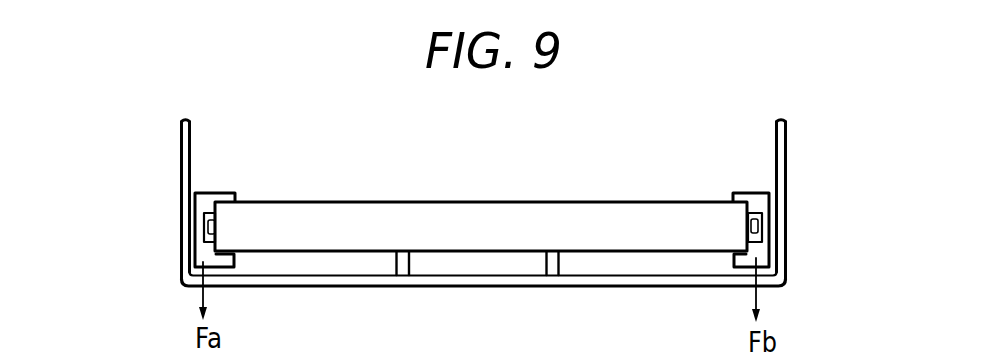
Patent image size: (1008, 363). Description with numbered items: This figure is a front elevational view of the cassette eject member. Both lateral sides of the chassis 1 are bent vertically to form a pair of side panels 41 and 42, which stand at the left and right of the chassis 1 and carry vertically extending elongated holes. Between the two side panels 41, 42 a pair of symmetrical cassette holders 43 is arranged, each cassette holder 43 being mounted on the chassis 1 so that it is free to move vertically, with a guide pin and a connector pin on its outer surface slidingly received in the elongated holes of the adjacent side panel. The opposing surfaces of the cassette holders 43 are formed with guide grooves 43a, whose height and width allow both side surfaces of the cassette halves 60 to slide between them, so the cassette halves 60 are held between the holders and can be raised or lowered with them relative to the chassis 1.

The chassis 1 is at (441, 287).
The side panel 41 is at (181, 157).
The side panel 42 is at (788, 168).
The cassette holder 43 is at (204, 197).
The guide groove 43a is at (232, 246).
The cassette half 60 is at (475, 203).